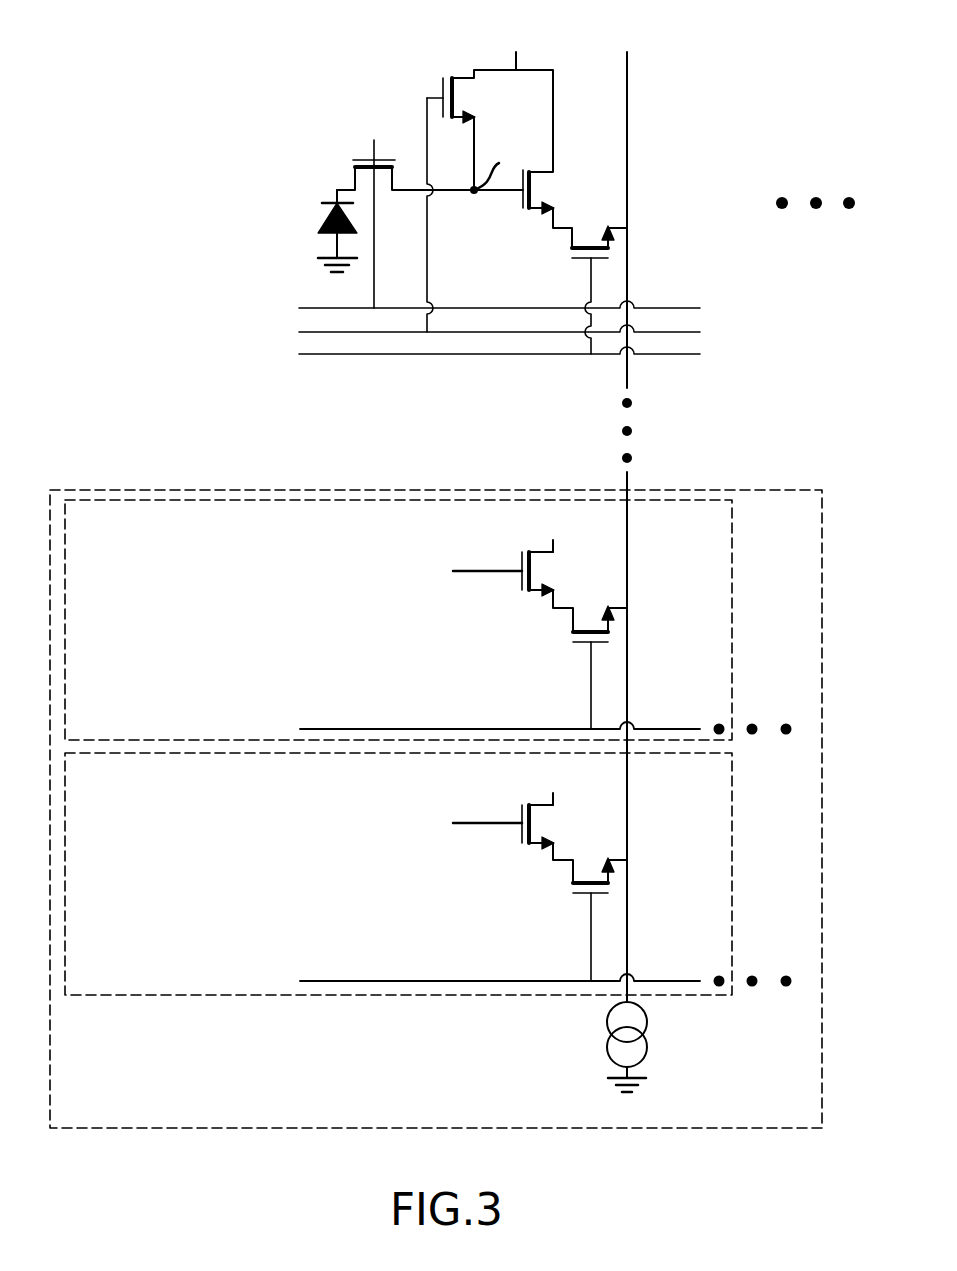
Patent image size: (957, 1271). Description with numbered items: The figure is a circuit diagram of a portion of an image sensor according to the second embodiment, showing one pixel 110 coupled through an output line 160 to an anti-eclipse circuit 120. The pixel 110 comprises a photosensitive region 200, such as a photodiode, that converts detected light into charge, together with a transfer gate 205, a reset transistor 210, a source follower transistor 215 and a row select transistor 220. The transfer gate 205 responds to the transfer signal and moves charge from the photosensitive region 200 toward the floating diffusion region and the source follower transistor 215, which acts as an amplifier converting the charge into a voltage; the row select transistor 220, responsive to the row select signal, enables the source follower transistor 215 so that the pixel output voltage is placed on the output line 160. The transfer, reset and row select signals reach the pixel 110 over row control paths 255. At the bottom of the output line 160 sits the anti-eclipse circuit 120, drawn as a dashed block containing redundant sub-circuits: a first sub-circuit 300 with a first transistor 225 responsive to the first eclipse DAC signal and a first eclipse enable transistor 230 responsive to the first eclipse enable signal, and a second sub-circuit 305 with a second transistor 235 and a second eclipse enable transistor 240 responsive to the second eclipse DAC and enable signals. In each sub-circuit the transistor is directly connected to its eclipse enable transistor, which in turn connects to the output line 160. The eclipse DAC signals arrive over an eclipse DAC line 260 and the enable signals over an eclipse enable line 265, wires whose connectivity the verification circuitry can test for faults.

The pixel 110 is at (298, 104).
The photosensitive region 200 is at (327, 213).
The transfer gate 205 is at (382, 158).
The reset transistor 210 is at (441, 88).
The source follower transistor 215 is at (521, 197).
The row select transistor 220 is at (574, 262).
The output line 160 is at (627, 97).
The row control paths 255 is at (712, 295).
The anti-eclipse circuit 120 is at (822, 600).
The first sub-circuit 300 is at (135, 500).
The second sub-circuit 305 is at (732, 842).
The first transistor 225 is at (520, 560).
The first eclipse enable transistor 230 is at (577, 651).
The second transistor 235 is at (520, 833).
The second eclipse enable transistor 240 is at (577, 893).
The eclipse DAC line 260 is at (490, 578).
The eclipse enable line 265 is at (418, 728).